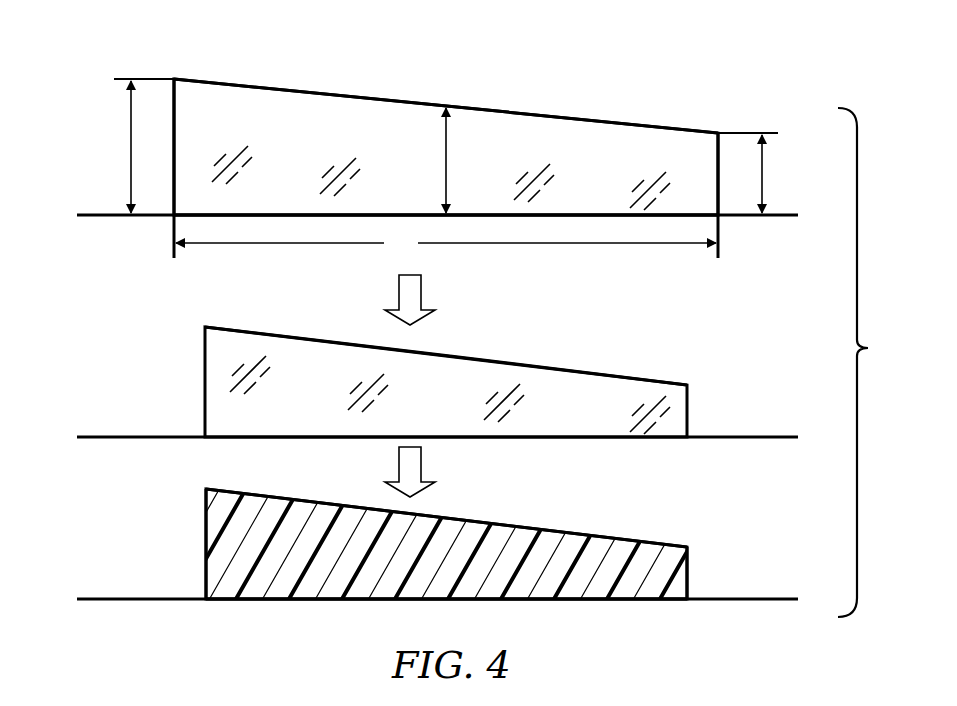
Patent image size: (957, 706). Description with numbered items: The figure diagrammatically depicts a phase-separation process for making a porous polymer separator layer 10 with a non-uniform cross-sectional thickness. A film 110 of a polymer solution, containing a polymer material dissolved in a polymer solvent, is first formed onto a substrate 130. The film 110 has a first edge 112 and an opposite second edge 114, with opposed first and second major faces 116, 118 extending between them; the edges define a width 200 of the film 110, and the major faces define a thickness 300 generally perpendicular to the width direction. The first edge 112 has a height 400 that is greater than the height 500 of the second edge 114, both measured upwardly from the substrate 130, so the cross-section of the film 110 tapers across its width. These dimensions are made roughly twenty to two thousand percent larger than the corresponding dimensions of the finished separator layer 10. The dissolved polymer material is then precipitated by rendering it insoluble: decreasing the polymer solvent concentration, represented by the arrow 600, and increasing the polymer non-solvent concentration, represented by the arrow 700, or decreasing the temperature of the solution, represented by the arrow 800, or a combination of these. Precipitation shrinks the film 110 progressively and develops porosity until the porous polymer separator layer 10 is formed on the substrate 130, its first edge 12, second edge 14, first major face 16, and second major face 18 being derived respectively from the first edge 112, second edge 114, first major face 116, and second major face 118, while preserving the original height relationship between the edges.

The film 110 is at (214, 54).
The first edge 112 is at (174, 112).
The second edge 114 is at (720, 193).
The first major face 116 is at (297, 90).
The second major face 118 is at (186, 218).
The substrate 130 is at (100, 213).
The height of first edge 400 is at (140, 146).
The thickness 300 is at (444, 160).
The height of second edge 500 is at (765, 190).
The width 200 is at (446, 243).
The arrow representing decreasing polymer solvent concentration 600 is at (308, 339).
The arrow representing increasing polymer non-solvent concentration 700 is at (317, 333).
The arrow representing decreasing temperature 800 is at (527, 360).
The porous polymer separator layer 10 is at (198, 511).
The first edge 12 is at (205, 557).
The second edge 14 is at (690, 578).
The first major face 16 is at (578, 530).
The second major face 18 is at (296, 601).